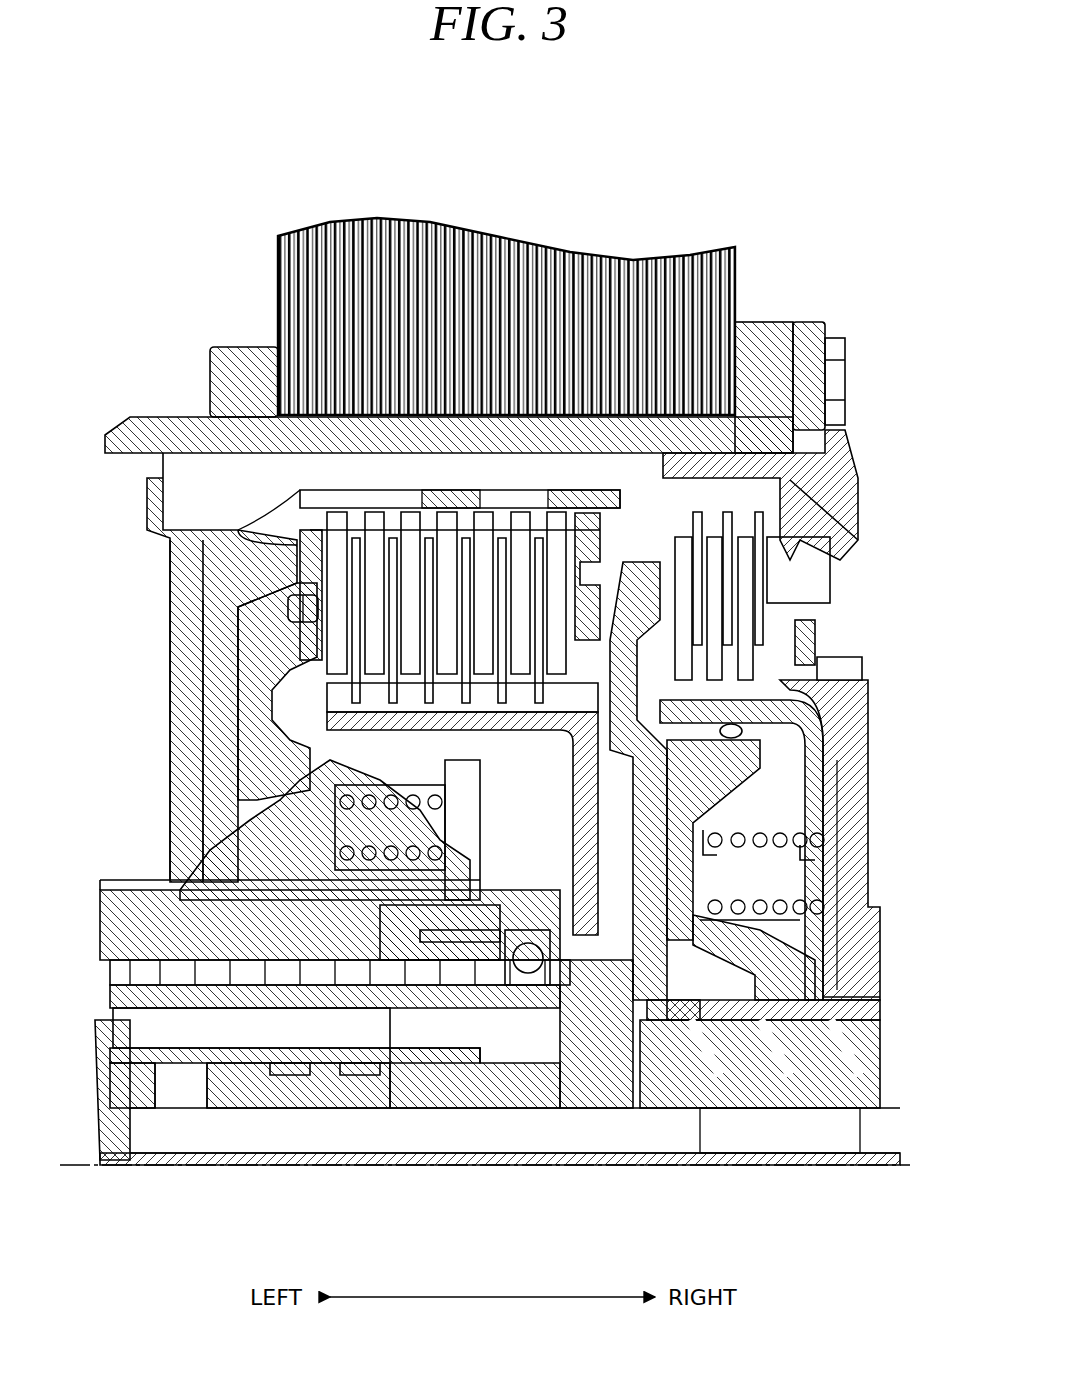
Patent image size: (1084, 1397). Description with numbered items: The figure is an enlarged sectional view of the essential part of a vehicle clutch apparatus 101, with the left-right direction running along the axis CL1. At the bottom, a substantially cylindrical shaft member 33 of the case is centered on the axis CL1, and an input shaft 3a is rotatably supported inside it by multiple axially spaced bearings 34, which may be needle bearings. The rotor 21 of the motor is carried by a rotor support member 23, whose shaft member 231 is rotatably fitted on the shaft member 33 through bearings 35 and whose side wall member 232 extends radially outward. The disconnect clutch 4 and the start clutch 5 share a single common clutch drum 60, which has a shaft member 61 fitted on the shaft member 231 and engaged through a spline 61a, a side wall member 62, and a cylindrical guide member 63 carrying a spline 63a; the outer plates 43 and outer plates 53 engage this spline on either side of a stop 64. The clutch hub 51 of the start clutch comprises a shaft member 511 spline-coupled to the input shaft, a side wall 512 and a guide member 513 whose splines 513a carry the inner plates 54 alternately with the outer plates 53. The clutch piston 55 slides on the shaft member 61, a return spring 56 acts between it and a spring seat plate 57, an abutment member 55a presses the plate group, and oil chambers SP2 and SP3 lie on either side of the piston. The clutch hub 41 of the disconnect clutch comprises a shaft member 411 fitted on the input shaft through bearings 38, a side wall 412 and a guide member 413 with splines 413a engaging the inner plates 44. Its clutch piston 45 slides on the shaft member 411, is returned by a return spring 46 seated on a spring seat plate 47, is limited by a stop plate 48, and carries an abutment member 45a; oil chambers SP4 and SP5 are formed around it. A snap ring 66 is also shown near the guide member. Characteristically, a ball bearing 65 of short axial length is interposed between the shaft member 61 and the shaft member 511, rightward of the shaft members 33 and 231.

The clutch apparatus 101 is at (718, 162).
The rotor 21 is at (740, 283).
The abutment member 55a is at (228, 412).
The outer plates 53 is at (372, 545).
The start clutch 5 is at (240, 525).
The rotor support member 23 is at (153, 545).
The side wall member 62 is at (220, 600).
The clutch drum 60 is at (195, 620).
The inner plates 54 is at (385, 655).
The side wall member 232 is at (170, 725).
The clutch piston 55 is at (232, 765).
The oil chamber SP3 is at (350, 800).
The return spring 56 is at (330, 830).
The oil chamber SP2 is at (200, 876).
The bearings 35 is at (128, 968).
The input shaft 3a is at (118, 1160).
The shaft member 231 is at (200, 1060).
The bearings 34 is at (295, 1063).
The shaft member 33 is at (350, 1048).
The shaft member 61 is at (440, 960).
The spline 61a is at (470, 940).
The clutch hub 51 is at (480, 1070).
The bearing 65 is at (528, 972).
The shaft member 511 is at (532, 1030).
The stop plate 48 is at (588, 880).
The side wall 512 is at (646, 1020).
The bearings 38 is at (685, 1110).
The shaft member 411 is at (805, 1060).
The axis CL1 is at (507, 1166).
The spline 63a is at (395, 500).
The guide member 63 is at (466, 500).
The stop 64 is at (588, 500).
The guide member 513 is at (478, 700).
The splines 513a is at (455, 720).
The spring seat plate 57 is at (478, 830).
The abutment member 45a is at (700, 515).
The outer plates 43 is at (740, 550).
The disconnect clutch 4 is at (865, 560).
The inner plates 44 is at (715, 605).
The snap ring 66 is at (810, 648).
The splines 413a is at (850, 670).
The spring seat plate 47 is at (852, 722).
The clutch hub 41 is at (868, 765).
The guide member 413 is at (750, 778).
The clutch piston 45 is at (750, 780).
The side wall 412 is at (848, 858).
The return spring 46 is at (815, 905).
The oil chamber SP4 is at (780, 965).
The oil chamber SP5 is at (826, 975).